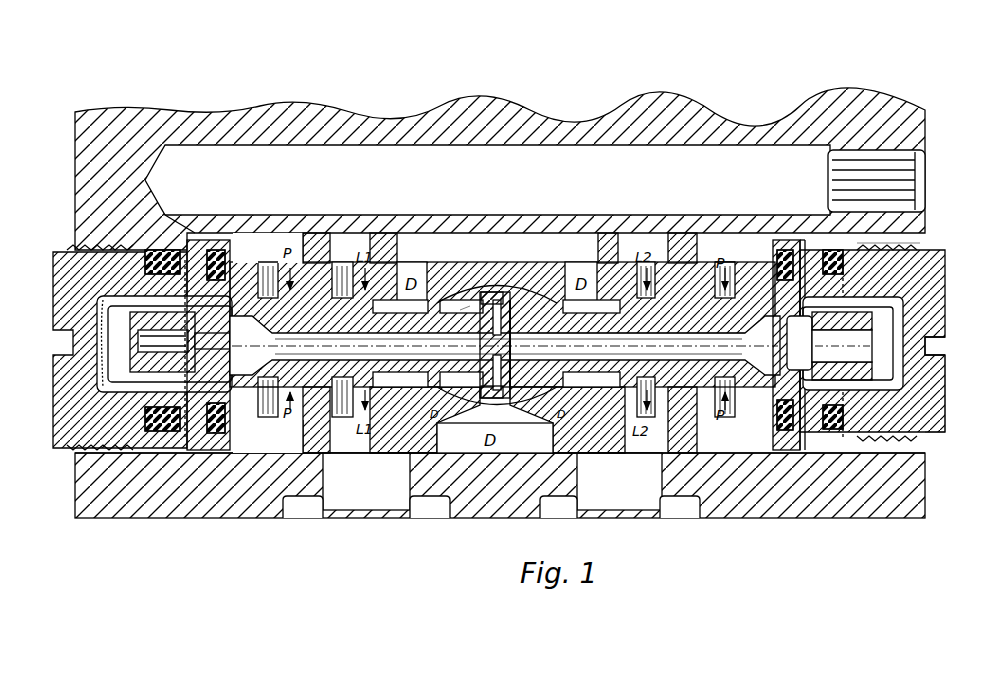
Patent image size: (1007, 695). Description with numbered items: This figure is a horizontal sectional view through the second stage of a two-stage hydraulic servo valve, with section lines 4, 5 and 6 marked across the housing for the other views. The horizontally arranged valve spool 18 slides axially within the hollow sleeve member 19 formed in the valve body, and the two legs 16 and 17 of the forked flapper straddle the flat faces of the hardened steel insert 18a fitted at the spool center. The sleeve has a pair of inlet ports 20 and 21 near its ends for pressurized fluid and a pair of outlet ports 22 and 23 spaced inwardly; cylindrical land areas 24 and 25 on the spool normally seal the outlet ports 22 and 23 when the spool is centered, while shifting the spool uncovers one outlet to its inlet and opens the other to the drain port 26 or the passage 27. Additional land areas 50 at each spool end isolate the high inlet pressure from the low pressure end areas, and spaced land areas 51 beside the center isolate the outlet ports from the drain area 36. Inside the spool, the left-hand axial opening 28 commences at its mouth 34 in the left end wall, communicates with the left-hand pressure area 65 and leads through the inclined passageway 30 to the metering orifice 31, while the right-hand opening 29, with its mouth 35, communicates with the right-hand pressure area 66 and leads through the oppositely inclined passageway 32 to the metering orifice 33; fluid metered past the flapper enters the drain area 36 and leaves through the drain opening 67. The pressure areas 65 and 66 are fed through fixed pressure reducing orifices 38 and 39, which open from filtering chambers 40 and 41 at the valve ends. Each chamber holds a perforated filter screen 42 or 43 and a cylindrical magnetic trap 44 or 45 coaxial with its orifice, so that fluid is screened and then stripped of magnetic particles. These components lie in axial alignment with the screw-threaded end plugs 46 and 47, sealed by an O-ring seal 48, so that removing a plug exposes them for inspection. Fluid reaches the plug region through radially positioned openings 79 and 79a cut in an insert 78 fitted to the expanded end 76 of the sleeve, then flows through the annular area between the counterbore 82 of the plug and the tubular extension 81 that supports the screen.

The section line 4- 4 is at (278, 565).
The section line 5- 5 is at (352, 27).
The section line 6- 6 is at (805, 567).
The leg of forked flapper 16 is at (493, 298).
The leg of forked flapper 17 is at (504, 380).
The valve spool 18 is at (620, 396).
The hardened steel insert 18a is at (490, 300).
The sleeve member 19 is at (655, 440).
The inlet port 20 is at (265, 266).
The inlet port 21 is at (728, 276).
The outlet port 22 is at (345, 266).
The outlet port 23 is at (660, 298).
The cylindrical land area 24 is at (383, 262).
The cylindrical land area 25 is at (680, 262).
The drain port 26 is at (560, 405).
The drain passage 27 is at (437, 425).
The left-hand axial opening 28 is at (410, 356).
The right-hand axial opening 29 is at (650, 356).
The inclined passageway 30 is at (480, 345).
The metering orifice 31 is at (510, 350).
The inclined passageway 32 is at (552, 300).
The metering orifice 33 is at (504, 306).
The bore land 34 is at (265, 300).
The mouth of right-hand opening 35 is at (760, 375).
The drain area 36 is at (520, 423).
The fixed pressure reducing orifice 38 is at (162, 342).
The fixed pressure reducing orifice 39 is at (812, 345).
The filtering chamber 40 is at (103, 358).
The filtering chamber 41 is at (978, 325).
The perforated filter screen 42 is at (925, 348).
The perforated filter screen 43 is at (112, 345).
The cylindrical magnetic trap 44 is at (130, 326).
The cylindrical magnetic trap 45 is at (903, 312).
The end plug 46 is at (940, 432).
The end plug 47 is at (55, 292).
The O-ring seal 48 is at (858, 213).
The land area 50 is at (325, 380).
The spaced land area 51 is at (405, 300).
The left-hand pressure area 65 is at (228, 352).
The right-hand pressure area 66 is at (724, 298).
The drain opening 67 is at (478, 400).
The expanded end of sleeve member 76 is at (842, 453).
The insert 78 is at (775, 262).
The radially positioned opening 79 is at (800, 453).
The radially positioned opening 79a is at (803, 268).
The tubular extension 81 is at (905, 272).
The counterbore 82 is at (903, 370).